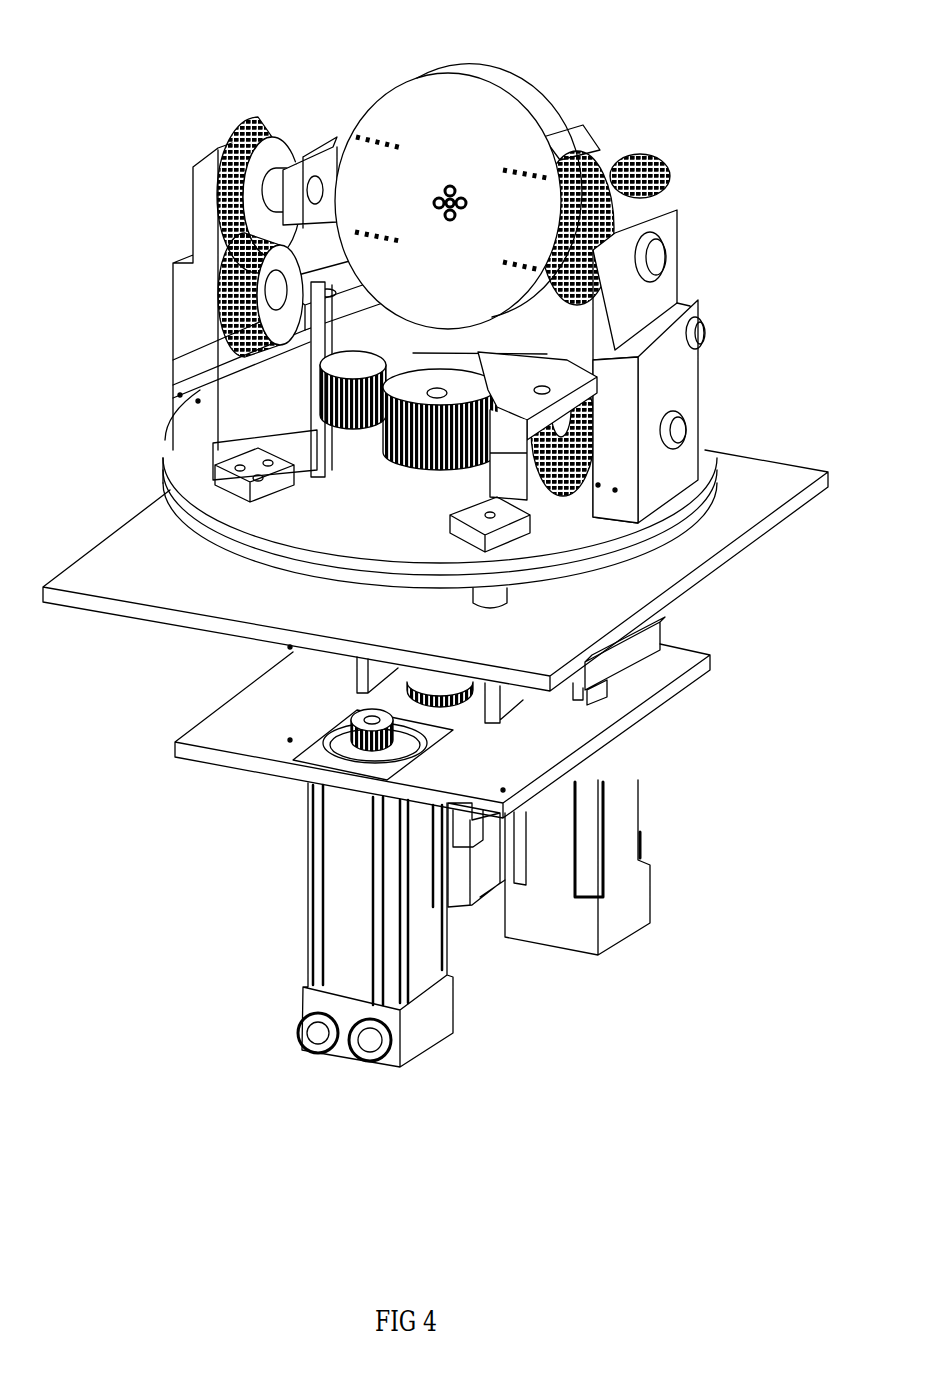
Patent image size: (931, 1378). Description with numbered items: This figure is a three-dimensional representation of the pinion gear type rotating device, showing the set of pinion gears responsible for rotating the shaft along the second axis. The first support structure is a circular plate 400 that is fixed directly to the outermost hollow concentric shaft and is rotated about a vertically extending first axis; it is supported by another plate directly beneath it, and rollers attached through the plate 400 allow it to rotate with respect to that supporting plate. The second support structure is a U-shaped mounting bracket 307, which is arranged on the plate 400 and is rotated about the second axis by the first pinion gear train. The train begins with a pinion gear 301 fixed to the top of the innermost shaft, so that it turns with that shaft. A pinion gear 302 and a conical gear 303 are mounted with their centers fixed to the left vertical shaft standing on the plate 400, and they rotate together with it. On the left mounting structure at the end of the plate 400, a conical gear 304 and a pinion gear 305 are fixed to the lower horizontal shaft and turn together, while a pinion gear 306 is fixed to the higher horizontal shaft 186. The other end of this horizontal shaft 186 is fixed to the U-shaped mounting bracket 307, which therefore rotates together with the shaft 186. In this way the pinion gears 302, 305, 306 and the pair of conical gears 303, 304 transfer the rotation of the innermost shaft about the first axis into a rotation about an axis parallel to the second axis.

The higher horizontal shaft 186 is at (253, 193).
The pinion gear 301 is at (420, 405).
The pinion gear 302 is at (353, 440).
The conical gear 303 is at (333, 362).
The conical gear 304 is at (312, 272).
The pinion gear 305 is at (212, 302).
The pinion gear 306 is at (212, 218).
The U-shaped mounting bracket 307 is at (323, 160).
The circular plate 400 is at (257, 520).